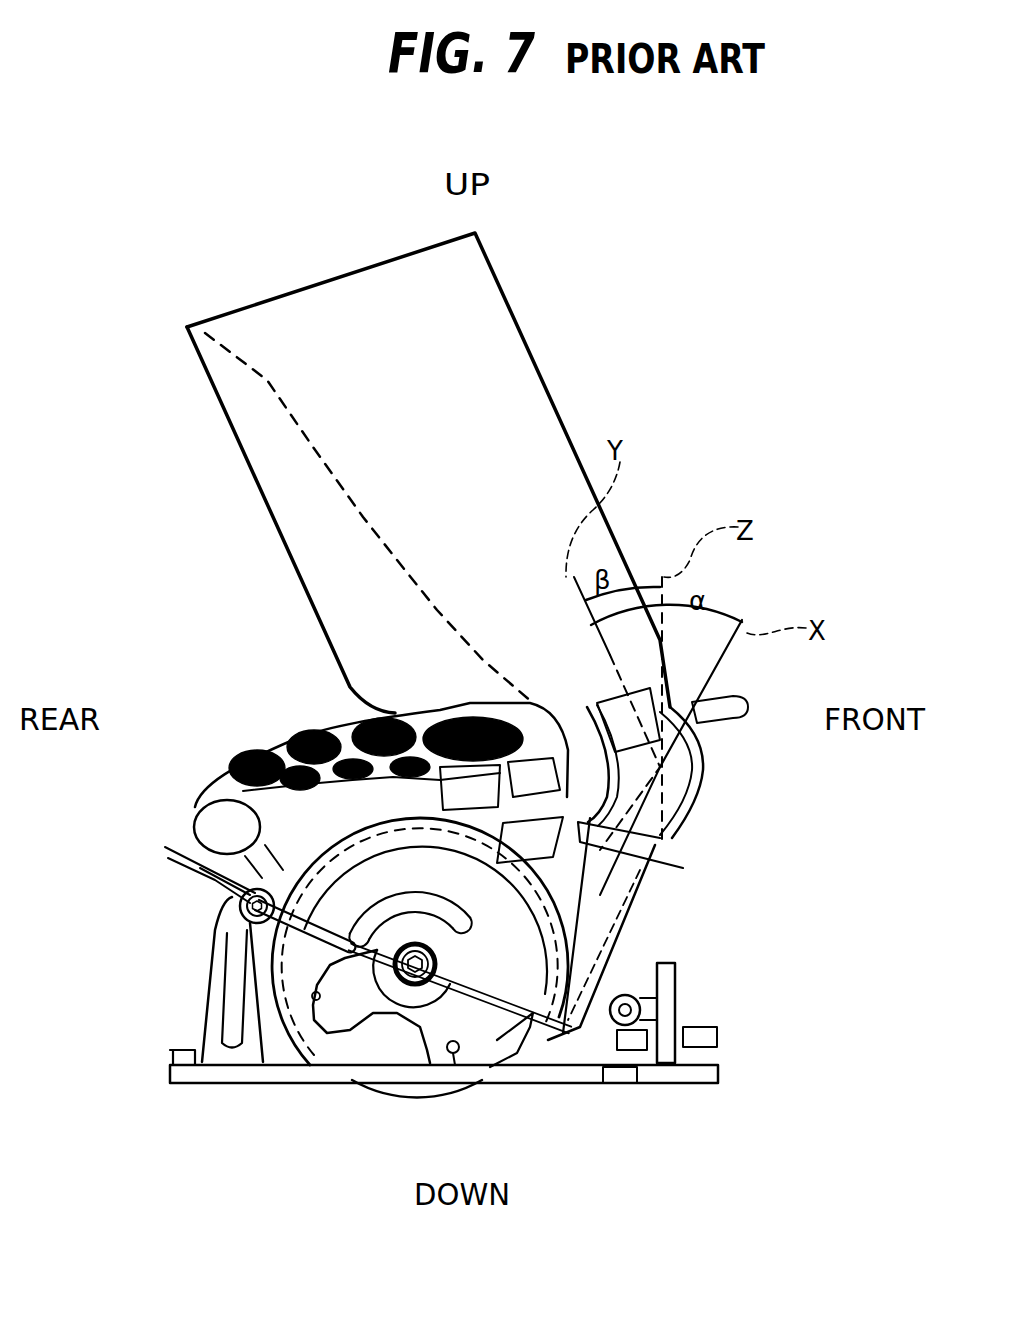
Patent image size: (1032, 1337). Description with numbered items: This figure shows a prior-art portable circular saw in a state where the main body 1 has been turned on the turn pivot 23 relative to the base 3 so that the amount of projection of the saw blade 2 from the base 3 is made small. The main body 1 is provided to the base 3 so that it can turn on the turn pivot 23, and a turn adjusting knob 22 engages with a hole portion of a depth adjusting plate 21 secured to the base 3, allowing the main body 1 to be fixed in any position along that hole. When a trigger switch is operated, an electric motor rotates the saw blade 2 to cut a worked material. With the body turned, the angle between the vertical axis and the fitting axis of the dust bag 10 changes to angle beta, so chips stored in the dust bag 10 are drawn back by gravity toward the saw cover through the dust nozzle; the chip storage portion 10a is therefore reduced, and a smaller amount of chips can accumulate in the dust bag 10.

The main body 1 is at (280, 720).
The saw blade 2 is at (513, 1083).
The base 3 is at (588, 1085).
The dust bag 10 is at (557, 410).
The chip storage portion 10a is at (303, 548).
The depth adjusting plate 21 is at (213, 970).
The turn adjusting knob 22 is at (233, 908).
The turn pivot 23 is at (667, 985).